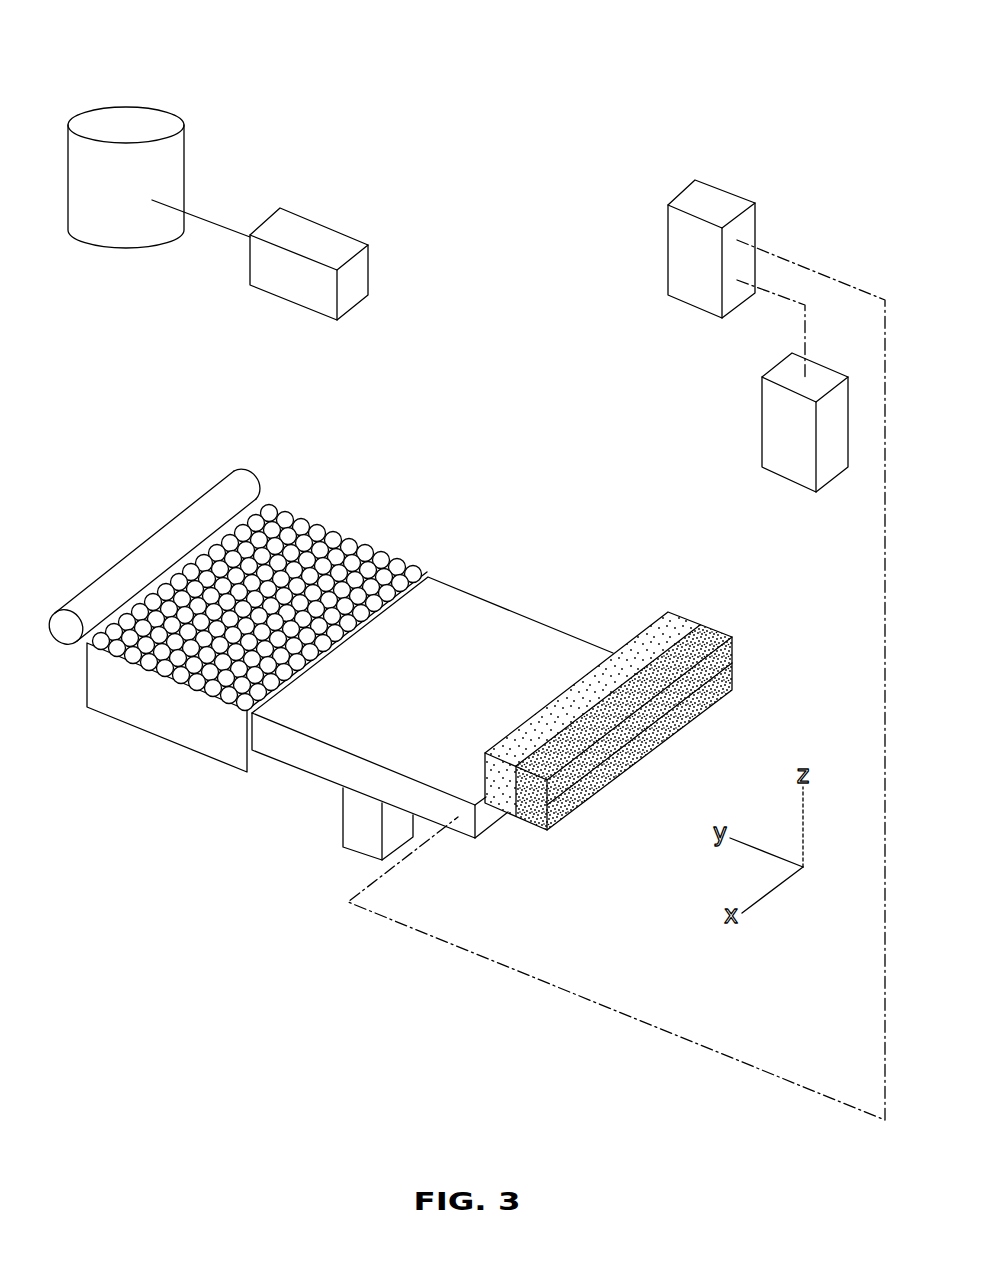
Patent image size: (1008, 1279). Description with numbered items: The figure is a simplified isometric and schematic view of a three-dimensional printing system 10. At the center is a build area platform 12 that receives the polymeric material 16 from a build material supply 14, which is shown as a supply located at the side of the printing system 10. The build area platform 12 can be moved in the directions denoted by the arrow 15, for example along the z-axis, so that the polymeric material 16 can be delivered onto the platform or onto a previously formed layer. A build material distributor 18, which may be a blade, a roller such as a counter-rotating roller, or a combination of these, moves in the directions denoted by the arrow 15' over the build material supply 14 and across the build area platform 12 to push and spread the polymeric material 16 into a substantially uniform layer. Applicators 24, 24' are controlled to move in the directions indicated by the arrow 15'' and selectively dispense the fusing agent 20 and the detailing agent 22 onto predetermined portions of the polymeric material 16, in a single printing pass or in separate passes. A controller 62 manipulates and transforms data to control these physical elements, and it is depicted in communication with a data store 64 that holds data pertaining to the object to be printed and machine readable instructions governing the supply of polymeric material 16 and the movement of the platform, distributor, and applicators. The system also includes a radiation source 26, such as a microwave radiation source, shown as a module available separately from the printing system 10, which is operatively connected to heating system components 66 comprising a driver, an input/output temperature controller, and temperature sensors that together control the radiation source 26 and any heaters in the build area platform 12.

The 3D printing system 10 is at (158, 68).
The build area platform 12 is at (457, 838).
The build material supply 14 is at (163, 715).
The arrow 15 is at (246, 802).
The arrow 15' is at (82, 480).
The arrow 15'' is at (544, 891).
The polymeric material 16 is at (127, 660).
The build material distributor 18 is at (233, 497).
The fusing agent 20 is at (620, 663).
The detailing agent 22 is at (717, 683).
The applicator 24 is at (624, 659).
The applicator 24' is at (724, 618).
The radiation source 26 is at (777, 425).
The controller 62 is at (170, 153).
The data store 64 is at (325, 245).
The heating system components 66 is at (712, 200).